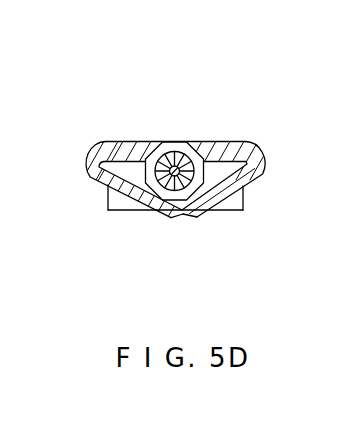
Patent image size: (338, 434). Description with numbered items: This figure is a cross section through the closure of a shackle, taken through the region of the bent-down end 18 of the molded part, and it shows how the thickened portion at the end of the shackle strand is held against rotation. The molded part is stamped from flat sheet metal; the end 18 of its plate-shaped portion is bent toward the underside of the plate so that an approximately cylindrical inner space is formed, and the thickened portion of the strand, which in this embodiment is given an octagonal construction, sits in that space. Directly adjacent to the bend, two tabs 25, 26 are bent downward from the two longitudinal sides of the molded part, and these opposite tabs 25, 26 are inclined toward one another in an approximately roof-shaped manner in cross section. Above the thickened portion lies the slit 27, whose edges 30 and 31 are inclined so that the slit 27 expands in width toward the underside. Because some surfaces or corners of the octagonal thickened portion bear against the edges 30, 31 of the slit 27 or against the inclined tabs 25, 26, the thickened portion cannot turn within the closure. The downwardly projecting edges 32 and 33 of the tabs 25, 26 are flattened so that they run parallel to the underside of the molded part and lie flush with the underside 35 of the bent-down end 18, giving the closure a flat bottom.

The end of the plate-shaped portion 18 is at (230, 202).
The tab 25 is at (96, 166).
The tab 26 is at (252, 162).
The slit 27 is at (176, 137).
The edge of the slit 30 is at (160, 143).
The edge of the slit 31 is at (188, 143).
The downwardly projecting edge of the tab 32 is at (167, 215).
The downwardly projecting edge of the tab 33 is at (185, 215).
The underside of the end 35 is at (128, 210).